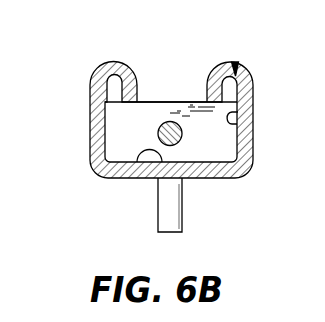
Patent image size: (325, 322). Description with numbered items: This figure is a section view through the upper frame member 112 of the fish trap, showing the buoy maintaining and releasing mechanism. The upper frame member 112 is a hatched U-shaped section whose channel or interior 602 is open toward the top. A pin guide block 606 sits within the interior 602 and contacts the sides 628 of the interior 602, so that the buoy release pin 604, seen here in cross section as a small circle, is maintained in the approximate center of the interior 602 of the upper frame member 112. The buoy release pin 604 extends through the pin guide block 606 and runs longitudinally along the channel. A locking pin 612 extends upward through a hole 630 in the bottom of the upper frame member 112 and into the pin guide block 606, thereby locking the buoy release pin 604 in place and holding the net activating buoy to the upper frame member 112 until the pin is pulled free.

The upper frame member 112 is at (92, 96).
The interior 602 is at (236, 63).
The buoy release pin 604 is at (158, 128).
The pin guide block 606 is at (231, 146).
The sides 628 is at (237, 124).
The hole 630 is at (137, 162).
The locking pin 612 is at (183, 205).